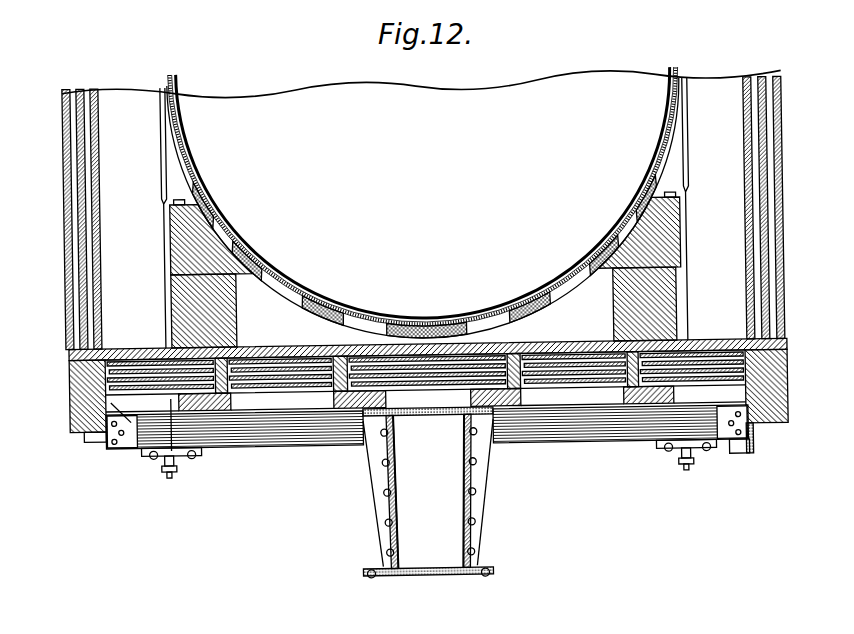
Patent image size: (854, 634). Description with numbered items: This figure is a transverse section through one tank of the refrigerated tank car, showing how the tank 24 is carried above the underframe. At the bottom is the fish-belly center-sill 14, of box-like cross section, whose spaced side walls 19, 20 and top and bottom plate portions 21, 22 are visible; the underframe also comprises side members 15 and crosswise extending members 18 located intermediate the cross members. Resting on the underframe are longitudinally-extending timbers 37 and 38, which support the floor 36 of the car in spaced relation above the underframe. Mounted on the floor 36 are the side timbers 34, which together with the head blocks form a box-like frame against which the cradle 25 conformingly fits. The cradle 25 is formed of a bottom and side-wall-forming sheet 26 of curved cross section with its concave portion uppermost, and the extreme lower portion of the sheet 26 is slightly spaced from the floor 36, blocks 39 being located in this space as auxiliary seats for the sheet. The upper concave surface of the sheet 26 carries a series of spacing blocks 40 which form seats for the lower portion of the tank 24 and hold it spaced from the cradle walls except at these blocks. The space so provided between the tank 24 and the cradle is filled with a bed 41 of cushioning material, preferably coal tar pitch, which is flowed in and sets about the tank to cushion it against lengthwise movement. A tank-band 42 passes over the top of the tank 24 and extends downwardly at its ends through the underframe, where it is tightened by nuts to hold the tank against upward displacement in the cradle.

The center-sill 14 is at (416, 502).
The side members 15 is at (108, 452).
The crosswise extending members 18 is at (588, 432).
The side wall of center-sill 19 is at (388, 522).
The side wall of center-sill 20 is at (470, 523).
The top plate portion of center-sill 21 is at (432, 413).
The bottom plate portion of center-sill 22 is at (440, 577).
The tank 24 is at (640, 192).
The cradle 25 is at (174, 208).
The bottom and side-wall-forming sheet 26 is at (500, 305).
The side timbers 34 is at (190, 254).
The floor 36 is at (140, 350).
The longitudinally-extending timbers 37 is at (232, 403).
The longitudinally-extending timbers 38 is at (108, 384).
The blocks 39 is at (366, 330).
The spacing blocks 40 is at (282, 290).
The bed of cushioning material 41 is at (320, 302).
The tank-band 42 is at (160, 157).